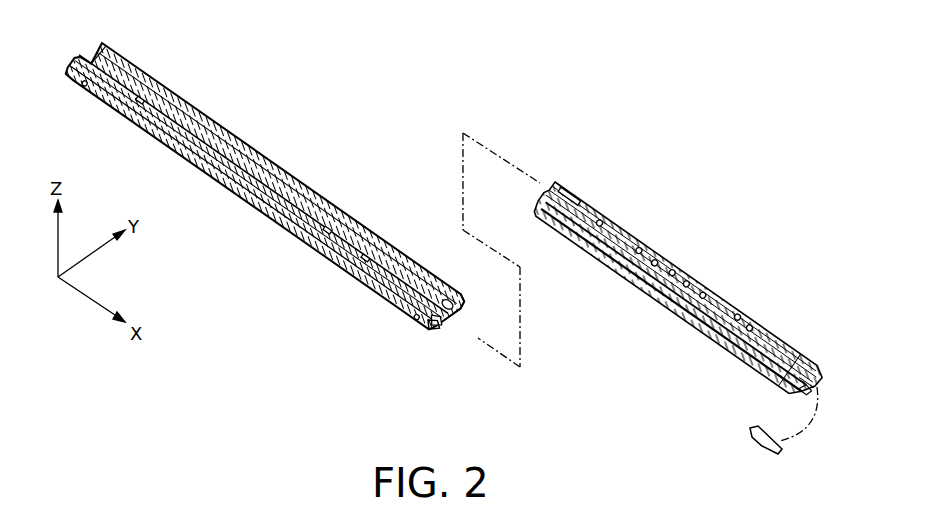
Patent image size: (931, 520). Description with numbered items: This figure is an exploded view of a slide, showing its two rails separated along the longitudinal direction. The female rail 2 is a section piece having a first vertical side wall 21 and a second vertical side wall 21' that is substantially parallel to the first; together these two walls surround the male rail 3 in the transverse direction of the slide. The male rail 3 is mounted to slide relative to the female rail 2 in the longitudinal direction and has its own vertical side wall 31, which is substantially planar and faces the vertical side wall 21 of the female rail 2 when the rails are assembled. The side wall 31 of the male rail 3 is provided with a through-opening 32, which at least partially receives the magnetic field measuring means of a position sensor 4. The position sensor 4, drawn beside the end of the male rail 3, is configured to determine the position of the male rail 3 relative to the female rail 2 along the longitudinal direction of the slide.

The female rail 2 is at (217, 131).
The vertical side wall 21 is at (459, 363).
The second vertical side wall 21' is at (525, 310).
The male rail 3 is at (634, 228).
The vertical side wall 31 is at (673, 315).
The through-opening 32 is at (753, 380).
The position sensor 4 is at (747, 456).